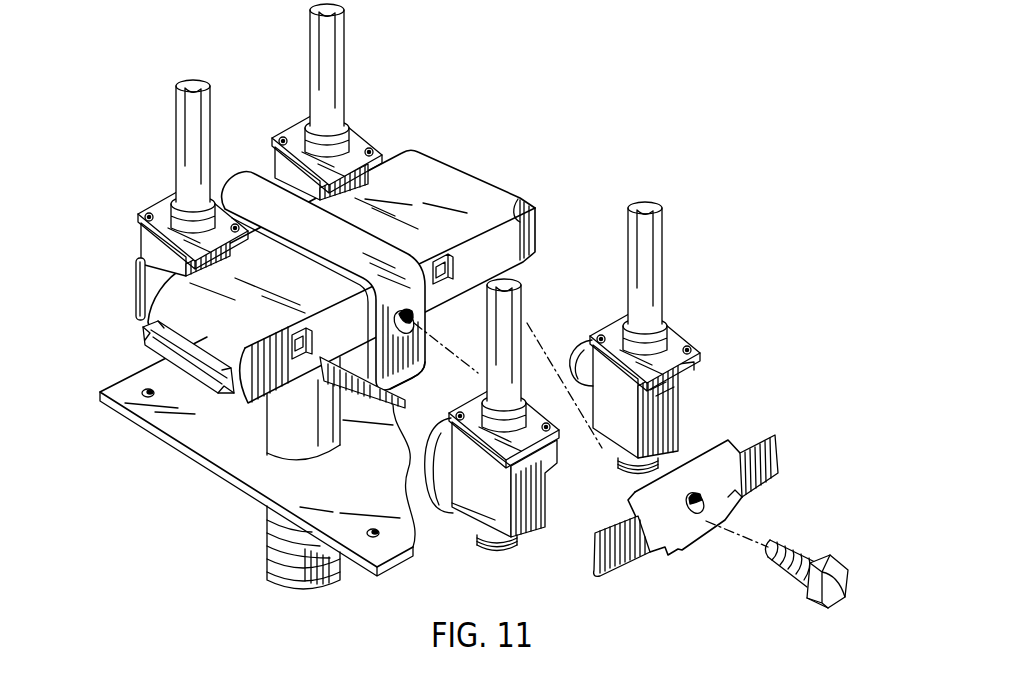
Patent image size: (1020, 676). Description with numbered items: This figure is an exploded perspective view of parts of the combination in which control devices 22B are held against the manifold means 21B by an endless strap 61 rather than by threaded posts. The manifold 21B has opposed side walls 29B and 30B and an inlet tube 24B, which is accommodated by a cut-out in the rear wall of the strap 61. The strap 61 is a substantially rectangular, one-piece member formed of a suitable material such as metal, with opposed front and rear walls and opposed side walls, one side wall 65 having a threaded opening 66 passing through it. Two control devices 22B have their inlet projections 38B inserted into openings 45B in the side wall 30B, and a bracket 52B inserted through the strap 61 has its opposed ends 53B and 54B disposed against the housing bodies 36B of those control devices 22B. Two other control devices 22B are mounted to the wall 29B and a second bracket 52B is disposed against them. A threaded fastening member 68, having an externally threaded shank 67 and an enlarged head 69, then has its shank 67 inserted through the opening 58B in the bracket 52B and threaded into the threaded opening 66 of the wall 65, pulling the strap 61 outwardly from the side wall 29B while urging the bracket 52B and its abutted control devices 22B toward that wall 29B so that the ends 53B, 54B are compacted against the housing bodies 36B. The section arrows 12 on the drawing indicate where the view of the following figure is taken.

The section line 12 is at (366, 30).
The manifold means 21B is at (413, 147).
The control devices 22B is at (408, 295).
The inlet tube 24B is at (336, 433).
The side wall 29B is at (257, 456).
The side wall 30B is at (146, 320).
The housing bodies 36B is at (155, 272).
The inlet projections 38B is at (487, 505).
The openings 45B is at (297, 328).
The brackets 52B is at (732, 498).
The end 53B is at (624, 562).
The end 54B is at (451, 440).
The opening 58B is at (700, 514).
The endless strap 61 is at (350, 290).
The side wall 65 is at (416, 356).
The threaded opening 66 is at (412, 316).
The externally threaded shank 67 is at (812, 580).
The threaded fastening member 68 is at (800, 546).
The enlarged head 69 is at (835, 598).